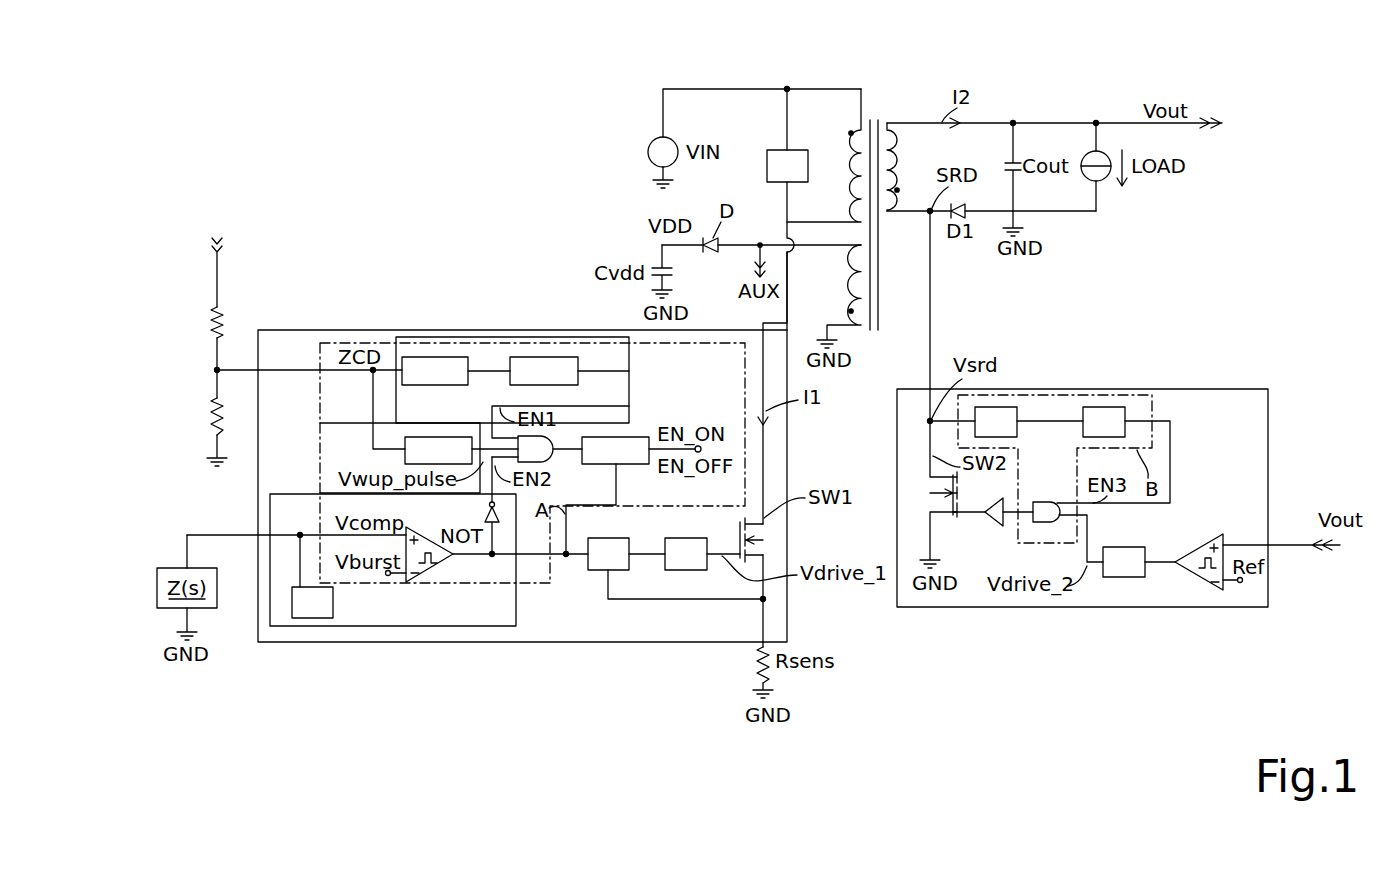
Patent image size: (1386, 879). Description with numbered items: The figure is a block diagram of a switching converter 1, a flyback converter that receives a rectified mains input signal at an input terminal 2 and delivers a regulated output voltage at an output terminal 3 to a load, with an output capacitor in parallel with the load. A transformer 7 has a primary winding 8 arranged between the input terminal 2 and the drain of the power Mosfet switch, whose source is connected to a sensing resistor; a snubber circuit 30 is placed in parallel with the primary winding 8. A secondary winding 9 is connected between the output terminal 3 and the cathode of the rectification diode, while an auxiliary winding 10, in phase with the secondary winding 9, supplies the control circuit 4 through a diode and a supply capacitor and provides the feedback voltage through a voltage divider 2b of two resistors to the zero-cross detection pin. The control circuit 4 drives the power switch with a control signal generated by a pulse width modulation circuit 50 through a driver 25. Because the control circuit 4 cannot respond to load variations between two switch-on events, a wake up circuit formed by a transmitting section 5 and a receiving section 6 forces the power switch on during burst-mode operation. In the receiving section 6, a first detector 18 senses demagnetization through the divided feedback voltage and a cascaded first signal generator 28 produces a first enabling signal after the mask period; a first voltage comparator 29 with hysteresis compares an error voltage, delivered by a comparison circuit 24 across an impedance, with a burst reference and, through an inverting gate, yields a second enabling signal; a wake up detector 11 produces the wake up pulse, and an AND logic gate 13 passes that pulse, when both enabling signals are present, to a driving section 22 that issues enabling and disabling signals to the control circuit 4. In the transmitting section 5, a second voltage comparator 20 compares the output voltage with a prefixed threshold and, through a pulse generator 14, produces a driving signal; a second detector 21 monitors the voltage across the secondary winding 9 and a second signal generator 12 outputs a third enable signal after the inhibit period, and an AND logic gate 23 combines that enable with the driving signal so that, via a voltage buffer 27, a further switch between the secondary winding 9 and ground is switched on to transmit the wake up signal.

The switching converter 1 is at (558, 160).
The input terminal 2 is at (787, 76).
The voltage divider 2b is at (195, 289).
The output terminal 3 is at (1096, 109).
The control circuit 4 is at (605, 658).
The transmitting section 5 is at (1138, 389).
The receiving section 6 is at (490, 345).
The transformer 7 is at (889, 230).
The primary winding 8 is at (862, 128).
The secondary winding 9 is at (892, 126).
The auxiliary winding 10 is at (850, 305).
The wake up detector 11 is at (428, 462).
The second signal generator 12 is at (1094, 433).
The AND logic gate 13 is at (522, 460).
The pulse generator 14 is at (1114, 573).
The first detector 18 is at (425, 382).
The second voltage comparator 20 is at (1201, 552).
The second detector 21 is at (986, 433).
The driving section 22 is at (605, 462).
The AND logic gate 23 is at (1045, 501).
The comparison circuit 24 is at (302, 613).
The driver 25 is at (676, 565).
The voltage buffer 27 is at (985, 522).
The first signal generator 28 is at (534, 382).
The first voltage comparator 29 is at (423, 538).
The snubber circuit 30 is at (777, 177).
The pulse width modulation circuit 50 is at (598, 565).